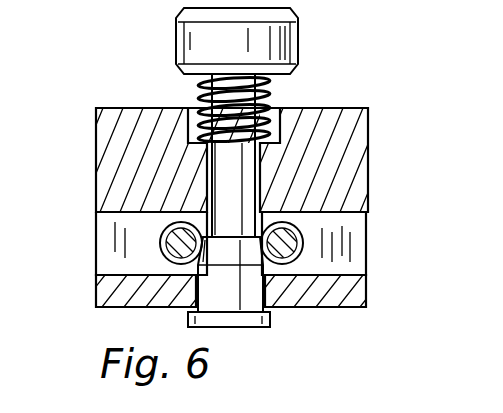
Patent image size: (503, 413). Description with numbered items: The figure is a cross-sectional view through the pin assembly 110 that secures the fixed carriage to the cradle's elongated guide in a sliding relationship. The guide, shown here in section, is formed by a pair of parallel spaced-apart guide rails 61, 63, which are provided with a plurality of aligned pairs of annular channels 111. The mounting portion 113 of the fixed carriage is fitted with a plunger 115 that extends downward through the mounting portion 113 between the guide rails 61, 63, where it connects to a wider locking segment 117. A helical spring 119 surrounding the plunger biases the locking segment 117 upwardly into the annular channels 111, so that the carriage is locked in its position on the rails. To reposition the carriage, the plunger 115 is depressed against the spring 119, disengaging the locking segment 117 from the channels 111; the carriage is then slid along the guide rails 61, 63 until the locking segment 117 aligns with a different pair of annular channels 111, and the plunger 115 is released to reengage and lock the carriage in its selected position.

The pin assembly 110 is at (232, 161).
The mounting portion 113 is at (335, 178).
The plunger 115 is at (190, 46).
The helical spring 119 is at (278, 93).
The locking segment 117 is at (228, 287).
The annular channels 111 is at (165, 237).
The guide rail 63 is at (170, 256).
The guide rail 61 is at (300, 248).